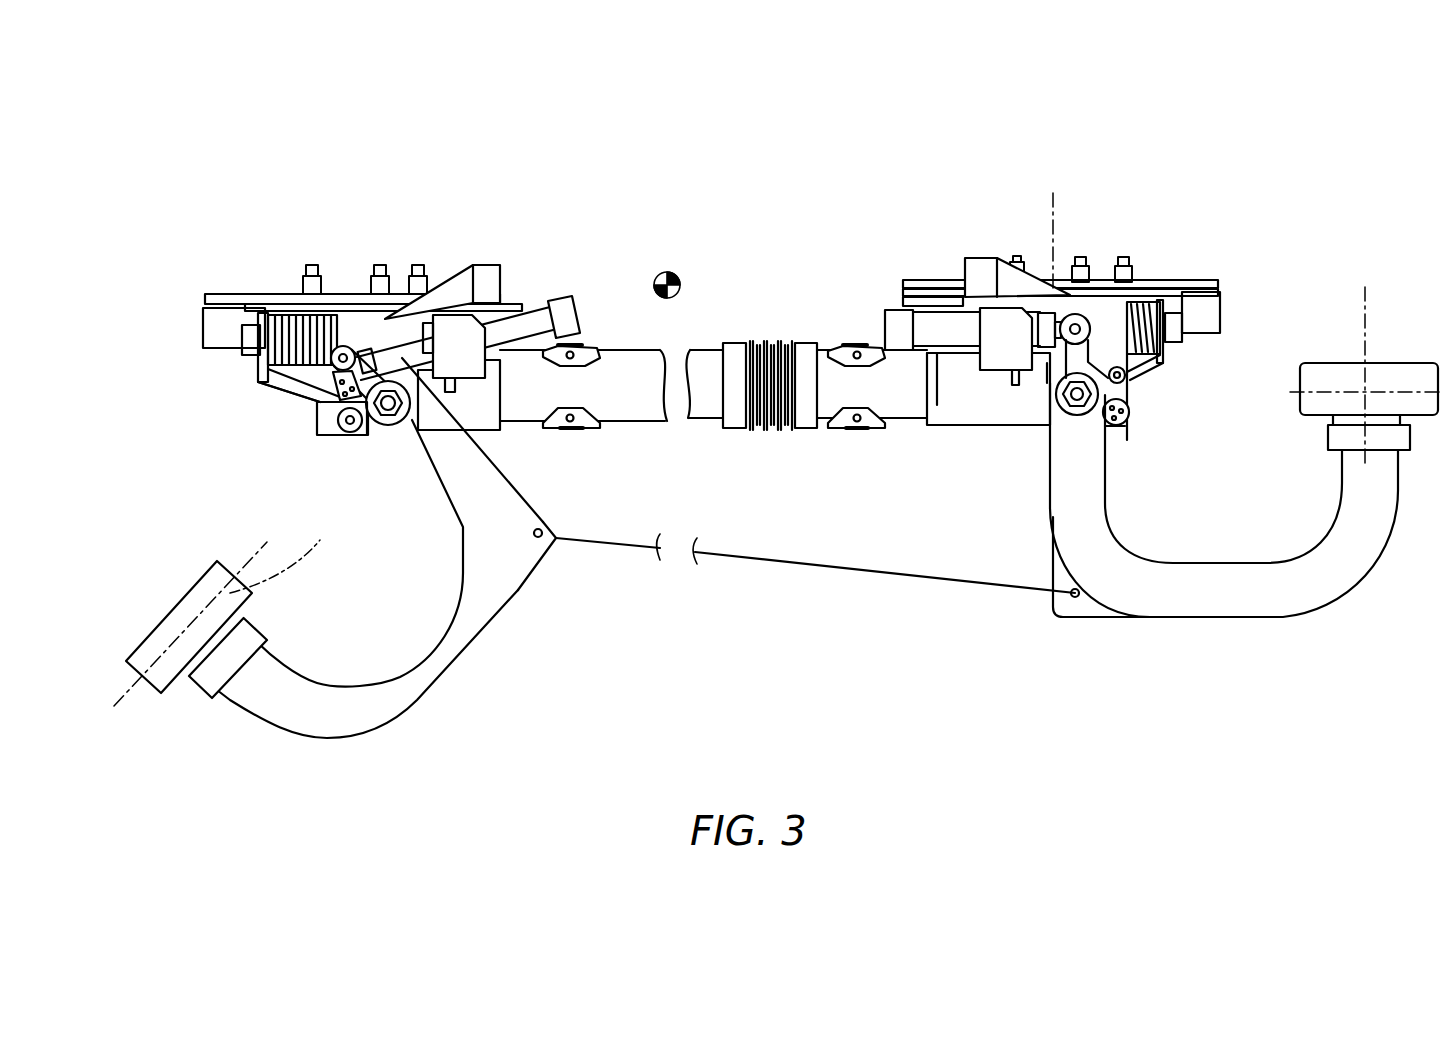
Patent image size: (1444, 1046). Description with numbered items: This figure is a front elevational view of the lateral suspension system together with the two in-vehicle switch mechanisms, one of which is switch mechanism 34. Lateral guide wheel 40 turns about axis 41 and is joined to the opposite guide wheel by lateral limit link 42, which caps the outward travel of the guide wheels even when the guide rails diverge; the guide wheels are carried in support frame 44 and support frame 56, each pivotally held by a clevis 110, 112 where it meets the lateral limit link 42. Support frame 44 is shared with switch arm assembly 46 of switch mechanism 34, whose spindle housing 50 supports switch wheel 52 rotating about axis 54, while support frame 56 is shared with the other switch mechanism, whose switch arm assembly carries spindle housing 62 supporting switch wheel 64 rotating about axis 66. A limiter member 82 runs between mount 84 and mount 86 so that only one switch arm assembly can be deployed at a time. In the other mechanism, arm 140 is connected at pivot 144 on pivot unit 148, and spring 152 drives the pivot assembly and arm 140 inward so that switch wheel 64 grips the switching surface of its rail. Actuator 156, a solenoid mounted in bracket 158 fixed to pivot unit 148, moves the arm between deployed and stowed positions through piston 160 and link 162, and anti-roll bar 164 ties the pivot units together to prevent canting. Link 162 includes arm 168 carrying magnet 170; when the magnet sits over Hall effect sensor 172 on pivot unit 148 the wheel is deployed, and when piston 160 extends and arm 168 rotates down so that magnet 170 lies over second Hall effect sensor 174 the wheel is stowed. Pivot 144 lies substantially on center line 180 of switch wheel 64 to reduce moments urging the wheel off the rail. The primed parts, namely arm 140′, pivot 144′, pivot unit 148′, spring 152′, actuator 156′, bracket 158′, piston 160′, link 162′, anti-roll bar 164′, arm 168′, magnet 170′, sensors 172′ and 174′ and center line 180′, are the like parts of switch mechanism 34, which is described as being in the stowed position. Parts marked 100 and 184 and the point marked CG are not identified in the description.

The in-vehicle switch mechanism 34 is at (533, 702).
The lateral guide wheel 40 is at (1147, 323).
The axis 41 is at (1040, 232).
The lateral limit link 42 is at (643, 353).
The support frame 44 is at (576, 437).
The switch arm assembly 46 is at (518, 646).
The spindle housing 50 is at (258, 635).
The switch wheel 52 is at (252, 590).
The axis 54 is at (150, 583).
The support frame 56 is at (858, 437).
The spindle housing 62 is at (1343, 440).
The switch wheel 64 is at (1333, 378).
The axis 66 is at (1370, 310).
The limiter member 82 is at (740, 556).
The mount 84 is at (522, 567).
The mount 86 is at (1090, 607).
The housing 100 is at (1222, 318).
The clevis 110 is at (597, 347).
The clevis 112 is at (838, 347).
The arm 140 is at (1235, 573).
The arm 140′ is at (410, 688).
The pivot 144 is at (1062, 395).
The pivot 144′ is at (387, 411).
The pivot unit 148 is at (1010, 300).
The pivot unit 148′ is at (420, 317).
The spring 152 is at (1153, 317).
The spring 152′ is at (296, 314).
The actuator 156 is at (887, 320).
The actuator 156′ is at (562, 300).
The bracket 158 is at (990, 336).
The bracket 158′ is at (465, 343).
The piston 160 is at (1087, 352).
The piston 160′ is at (375, 370).
The link 162 is at (1090, 327).
The link 162′ is at (347, 346).
The anti-roll bar 164 is at (995, 258).
The anti-roll bar 164′ is at (490, 262).
The arm 168 is at (1127, 397).
The arm 168′ is at (338, 396).
The magnet 170 is at (1163, 363).
The magnet 170′ is at (340, 430).
The triple redundant Hall effect sensor 172 is at (1130, 387).
The triple redundant Hall effect sensor 172′ is at (330, 382).
The second triple redundant Hall effect sensor 174 is at (1130, 426).
The second triple redundant Hall effect sensor 174′ is at (352, 433).
The center line 180 is at (1415, 390).
The center line 180′ is at (287, 552).
The mounting plate 184 is at (270, 298).
The center of gravity CG is at (670, 272).